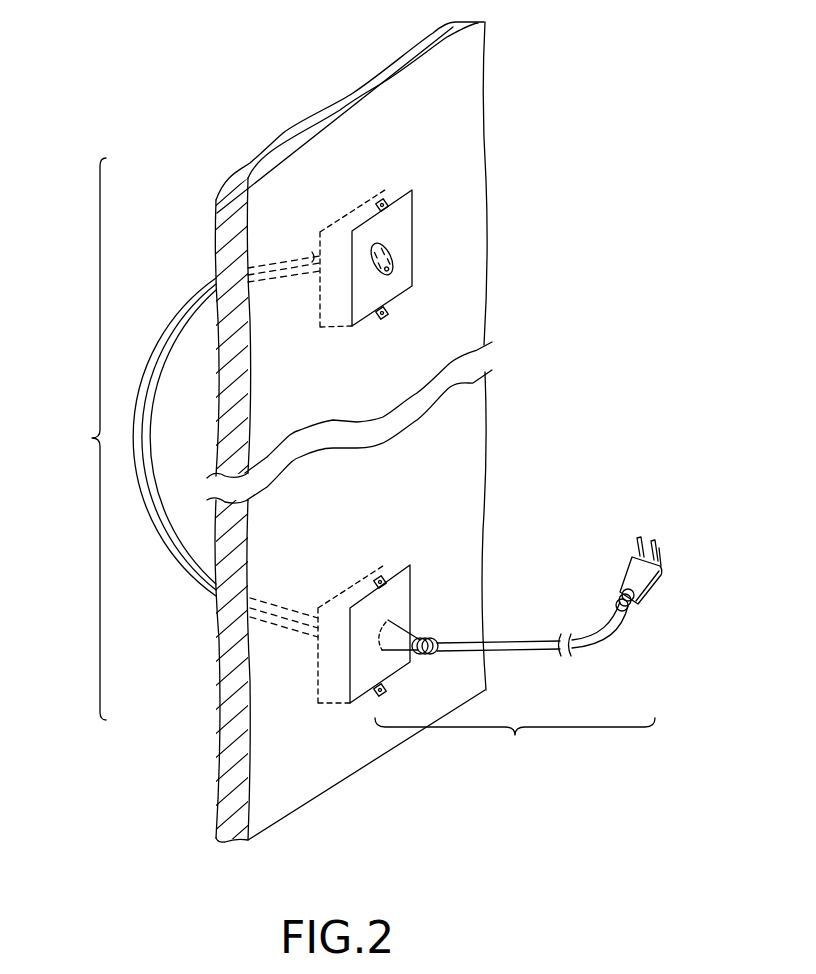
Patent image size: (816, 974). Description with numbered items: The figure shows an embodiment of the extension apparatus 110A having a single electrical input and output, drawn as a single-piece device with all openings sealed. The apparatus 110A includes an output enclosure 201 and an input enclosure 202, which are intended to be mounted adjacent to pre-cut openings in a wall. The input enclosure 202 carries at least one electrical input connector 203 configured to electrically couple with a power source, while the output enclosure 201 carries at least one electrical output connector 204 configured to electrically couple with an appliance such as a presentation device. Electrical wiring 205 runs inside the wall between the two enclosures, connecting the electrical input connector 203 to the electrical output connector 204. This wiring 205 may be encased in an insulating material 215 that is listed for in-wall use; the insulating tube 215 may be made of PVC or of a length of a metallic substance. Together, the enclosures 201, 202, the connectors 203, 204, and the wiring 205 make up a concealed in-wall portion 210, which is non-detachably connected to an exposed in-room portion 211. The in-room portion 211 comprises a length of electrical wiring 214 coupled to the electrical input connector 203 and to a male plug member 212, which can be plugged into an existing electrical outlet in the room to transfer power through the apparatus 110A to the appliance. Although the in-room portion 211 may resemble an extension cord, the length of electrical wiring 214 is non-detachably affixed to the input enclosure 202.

The extension apparatus 110A is at (668, 84).
The output enclosure 201 is at (413, 222).
The input enclosure 202 is at (408, 592).
The electrical input connector 203 is at (386, 648).
The electrical output connector 204 is at (392, 252).
The electrical wiring 205 is at (160, 524).
The in-wall portion 210 is at (78, 439).
The in-room portion 211 is at (515, 744).
The male plug member 212 is at (647, 580).
The length of electrical wiring 214 is at (528, 652).
The insulating material 215 is at (180, 562).